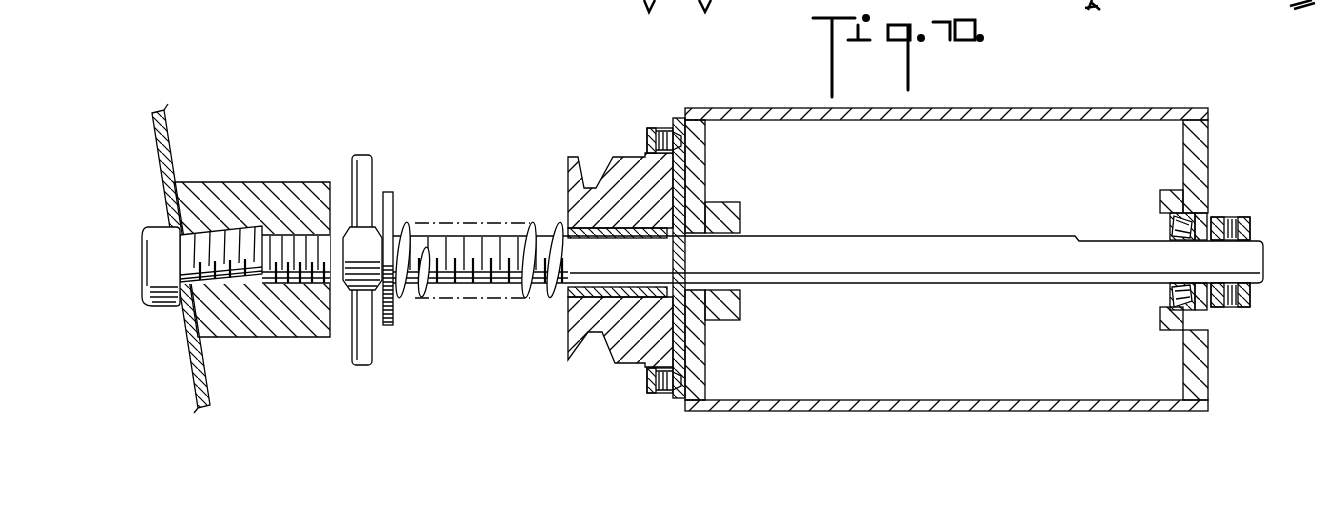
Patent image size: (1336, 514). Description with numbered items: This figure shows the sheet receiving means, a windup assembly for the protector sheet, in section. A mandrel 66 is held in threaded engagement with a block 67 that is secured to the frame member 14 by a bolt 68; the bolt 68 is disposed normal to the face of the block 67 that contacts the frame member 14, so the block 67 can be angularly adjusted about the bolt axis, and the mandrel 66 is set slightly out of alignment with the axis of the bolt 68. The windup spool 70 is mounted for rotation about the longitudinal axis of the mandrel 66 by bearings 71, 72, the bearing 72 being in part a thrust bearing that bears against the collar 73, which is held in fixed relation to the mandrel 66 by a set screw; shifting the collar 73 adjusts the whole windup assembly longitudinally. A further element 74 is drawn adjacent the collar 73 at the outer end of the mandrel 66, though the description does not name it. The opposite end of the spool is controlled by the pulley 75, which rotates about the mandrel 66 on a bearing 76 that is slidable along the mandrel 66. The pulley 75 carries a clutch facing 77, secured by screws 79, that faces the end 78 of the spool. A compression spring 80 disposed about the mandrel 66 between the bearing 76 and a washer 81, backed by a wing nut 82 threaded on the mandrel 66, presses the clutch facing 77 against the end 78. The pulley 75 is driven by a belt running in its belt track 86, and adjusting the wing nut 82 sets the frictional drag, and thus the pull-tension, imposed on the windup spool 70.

The frame member 14 is at (192, 381).
The mandrel 66 is at (1266, 261).
The block 67 is at (250, 182).
The bolt 68 is at (140, 280).
The windup spool 70 is at (1174, 110).
The bearing 71 is at (740, 231).
The bearing 72 is at (1163, 293).
The collar 73 is at (1233, 307).
The lock nut 74 is at (1232, 220).
The pulley 75 is at (625, 156).
The bearing 76 is at (612, 286).
The clutch facing 77 is at (668, 200).
The end of the spool 78 is at (698, 178).
The screws 79 is at (643, 381).
The compression spring 80 is at (410, 222).
The washer 81 is at (397, 201).
The wing nut 82 is at (370, 170).
The belt track 86 is at (587, 357).